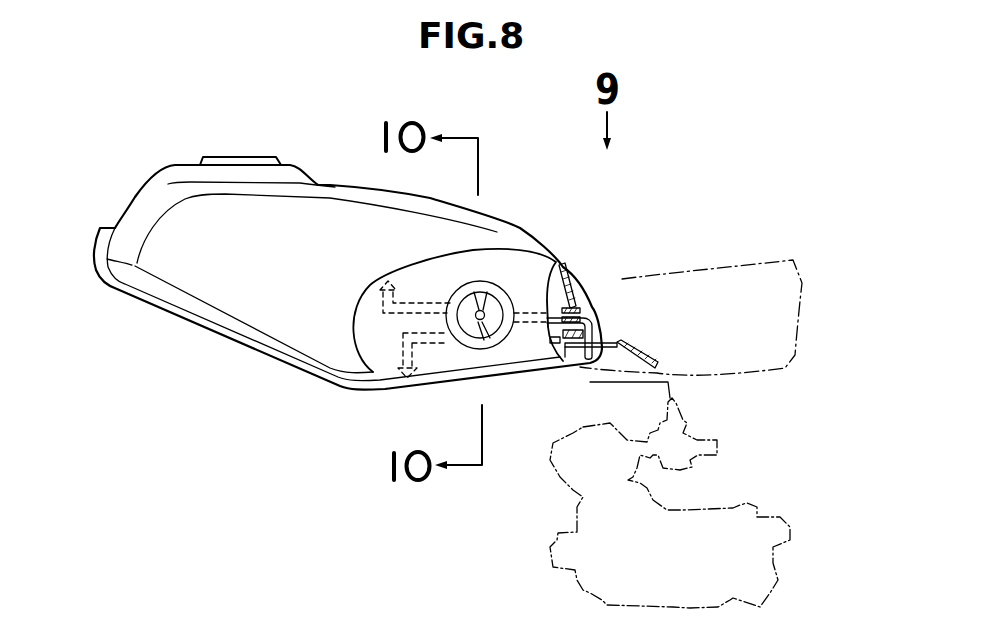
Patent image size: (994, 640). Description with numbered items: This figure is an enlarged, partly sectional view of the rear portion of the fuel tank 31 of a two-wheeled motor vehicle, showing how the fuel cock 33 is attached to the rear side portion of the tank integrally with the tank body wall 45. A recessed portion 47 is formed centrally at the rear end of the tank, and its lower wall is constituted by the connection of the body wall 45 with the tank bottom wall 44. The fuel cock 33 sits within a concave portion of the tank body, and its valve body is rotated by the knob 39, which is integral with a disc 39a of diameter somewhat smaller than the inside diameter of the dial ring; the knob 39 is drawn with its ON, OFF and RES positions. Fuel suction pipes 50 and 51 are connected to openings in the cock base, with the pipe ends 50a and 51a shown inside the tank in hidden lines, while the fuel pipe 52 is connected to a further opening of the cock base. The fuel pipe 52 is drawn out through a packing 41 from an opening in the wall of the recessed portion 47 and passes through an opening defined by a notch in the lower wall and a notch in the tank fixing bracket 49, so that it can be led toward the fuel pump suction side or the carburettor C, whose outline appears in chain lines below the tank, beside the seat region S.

The fuel tank 31 is at (255, 273).
The fuel cock 33 is at (516, 273).
The knob 39 is at (487, 342).
The disc 39a is at (492, 317).
The packing 41 is at (597, 312).
The tank bottom wall 44 is at (563, 360).
The body wall 45 is at (564, 264).
The recessed portion 47 is at (588, 281).
The tank fixing bracket 49 is at (632, 355).
The fuel suction pipe 50 is at (424, 300).
The fuel hose 50a is at (388, 283).
The fuel suction pipe 51 is at (432, 348).
The hose end 51a is at (392, 386).
The fuel pipe 52 is at (598, 316).
The seat S is at (711, 340).
The carburettor C is at (683, 442).